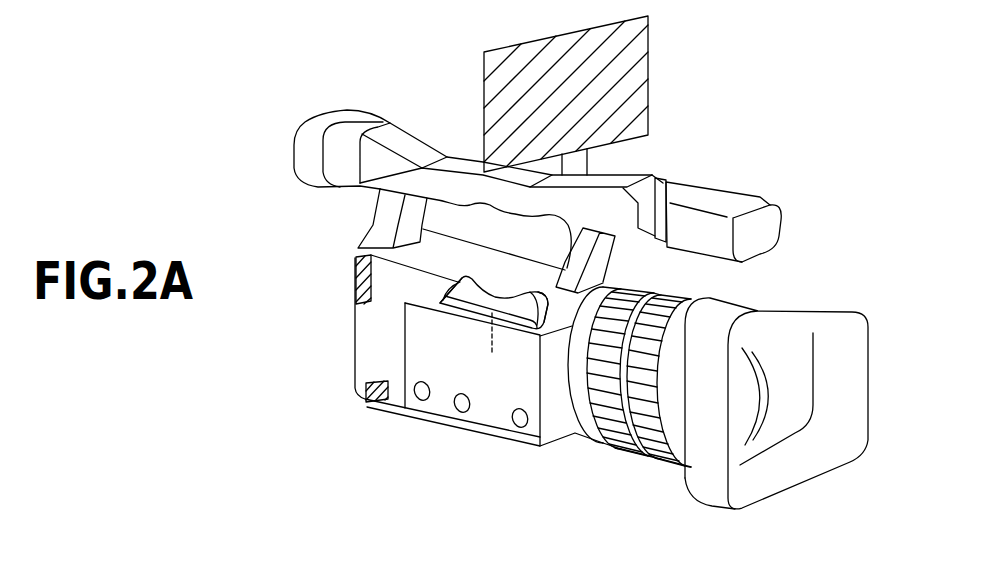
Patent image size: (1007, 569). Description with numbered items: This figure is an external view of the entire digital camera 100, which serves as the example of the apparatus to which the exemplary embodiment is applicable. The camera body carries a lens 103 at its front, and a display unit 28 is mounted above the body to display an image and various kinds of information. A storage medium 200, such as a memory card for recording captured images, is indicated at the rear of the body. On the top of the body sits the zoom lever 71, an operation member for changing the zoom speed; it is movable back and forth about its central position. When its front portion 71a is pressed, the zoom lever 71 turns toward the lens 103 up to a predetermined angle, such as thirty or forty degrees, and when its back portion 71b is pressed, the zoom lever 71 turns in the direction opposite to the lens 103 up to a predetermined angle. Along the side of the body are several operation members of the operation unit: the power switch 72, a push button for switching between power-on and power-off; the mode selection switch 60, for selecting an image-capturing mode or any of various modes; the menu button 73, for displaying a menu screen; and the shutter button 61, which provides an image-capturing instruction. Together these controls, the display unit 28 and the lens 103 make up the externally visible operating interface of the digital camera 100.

The display unit 28 is at (650, 58).
The digital camera 100 is at (736, 190).
The storage medium 200 is at (355, 280).
The zoom lever 71 is at (461, 279).
The front portion 71a is at (524, 322).
The back portion 71b is at (453, 298).
The power switch 72 is at (373, 403).
The mode selection switch 60 is at (420, 401).
The menu button 73 is at (460, 413).
The shutter button 61 is at (520, 428).
The lens 103 is at (748, 406).